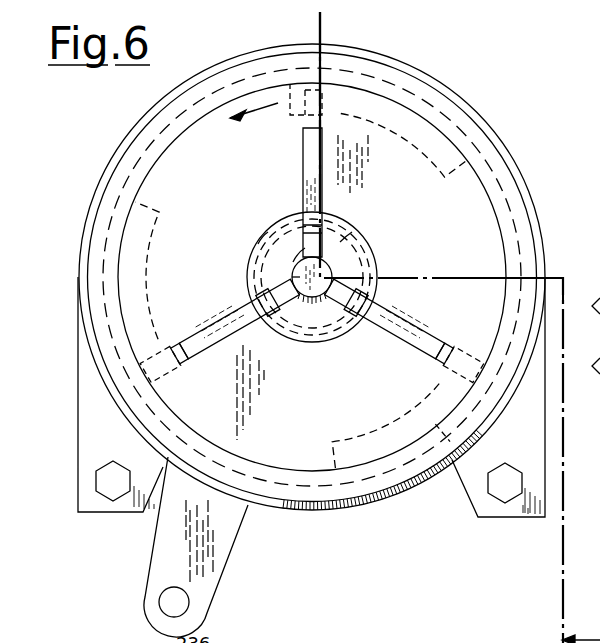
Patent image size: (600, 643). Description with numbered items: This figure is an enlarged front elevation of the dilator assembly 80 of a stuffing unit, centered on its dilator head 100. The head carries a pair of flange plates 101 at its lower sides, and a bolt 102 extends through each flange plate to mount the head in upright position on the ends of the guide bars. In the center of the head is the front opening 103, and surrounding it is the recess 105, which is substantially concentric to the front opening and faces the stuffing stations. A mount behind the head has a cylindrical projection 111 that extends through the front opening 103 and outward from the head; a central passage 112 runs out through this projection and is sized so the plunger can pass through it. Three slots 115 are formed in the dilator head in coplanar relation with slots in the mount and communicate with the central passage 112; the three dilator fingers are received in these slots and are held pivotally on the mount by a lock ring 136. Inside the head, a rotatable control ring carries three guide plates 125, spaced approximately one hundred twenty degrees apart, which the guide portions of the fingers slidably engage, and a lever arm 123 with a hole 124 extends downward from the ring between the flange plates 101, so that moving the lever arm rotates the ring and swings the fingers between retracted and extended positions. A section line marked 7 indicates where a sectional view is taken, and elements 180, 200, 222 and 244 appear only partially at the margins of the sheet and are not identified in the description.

The section line 7- 7 is at (322, 15).
The dilator assembly 80 is at (438, 82).
The dilator head 100 is at (470, 107).
The flange plates 101 is at (120, 438).
The bolts 102 is at (110, 492).
The front opening 103 is at (312, 300).
The recess 105 is at (376, 262).
The cylindrical projection 111 is at (295, 262).
The central passage 112 is at (296, 276).
The slots 115 is at (300, 164).
The lever arm 123 is at (224, 556).
The hole 124 is at (180, 613).
The guide plates 125 is at (395, 141).
The lock ring 136 is at (258, 254).
The drive assembly 180 is at (550, 642).
The frame member 200 is at (66, 642).
The frame element 222 is at (47, 635).
The frame element 244 is at (99, 637).